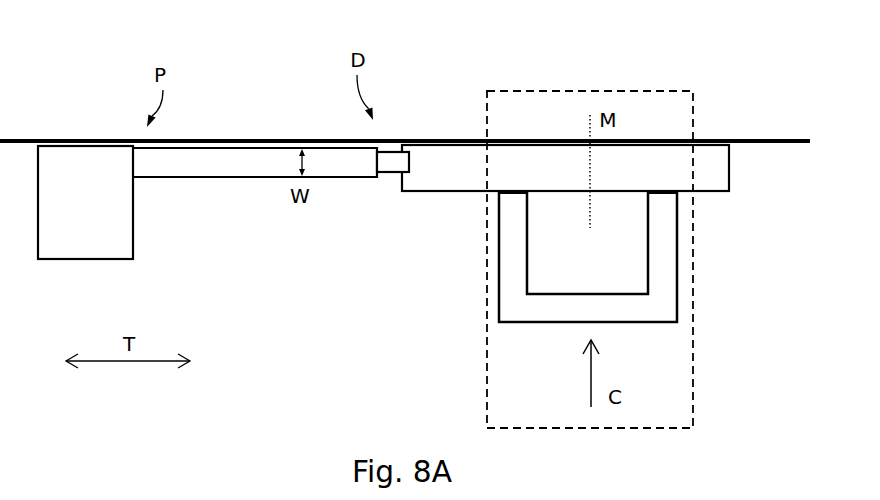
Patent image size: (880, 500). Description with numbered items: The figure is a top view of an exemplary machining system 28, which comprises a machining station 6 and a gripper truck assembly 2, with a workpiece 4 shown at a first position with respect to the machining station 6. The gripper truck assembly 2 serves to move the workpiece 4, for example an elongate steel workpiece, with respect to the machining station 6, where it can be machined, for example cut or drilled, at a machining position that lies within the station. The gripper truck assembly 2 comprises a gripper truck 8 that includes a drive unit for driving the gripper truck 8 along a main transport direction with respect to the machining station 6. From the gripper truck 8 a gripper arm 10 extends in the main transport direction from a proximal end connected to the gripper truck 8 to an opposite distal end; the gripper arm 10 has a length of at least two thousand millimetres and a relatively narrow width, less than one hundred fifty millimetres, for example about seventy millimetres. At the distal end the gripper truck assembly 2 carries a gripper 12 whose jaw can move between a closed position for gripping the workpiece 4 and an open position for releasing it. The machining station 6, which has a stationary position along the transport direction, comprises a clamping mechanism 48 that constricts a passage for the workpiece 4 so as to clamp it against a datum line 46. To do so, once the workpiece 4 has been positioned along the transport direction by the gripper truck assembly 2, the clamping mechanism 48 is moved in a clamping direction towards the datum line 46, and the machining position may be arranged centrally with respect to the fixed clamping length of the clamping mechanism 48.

The gripper truck assembly 2 is at (288, 63).
The workpiece 4 is at (708, 158).
The machining station 6 is at (524, 90).
The gripper truck 8 is at (83, 158).
The gripper arm 10 is at (217, 158).
The gripper 12 is at (392, 166).
The machining system 28 is at (248, 390).
The datum line 46 is at (452, 140).
The clamping mechanism 48 is at (667, 255).